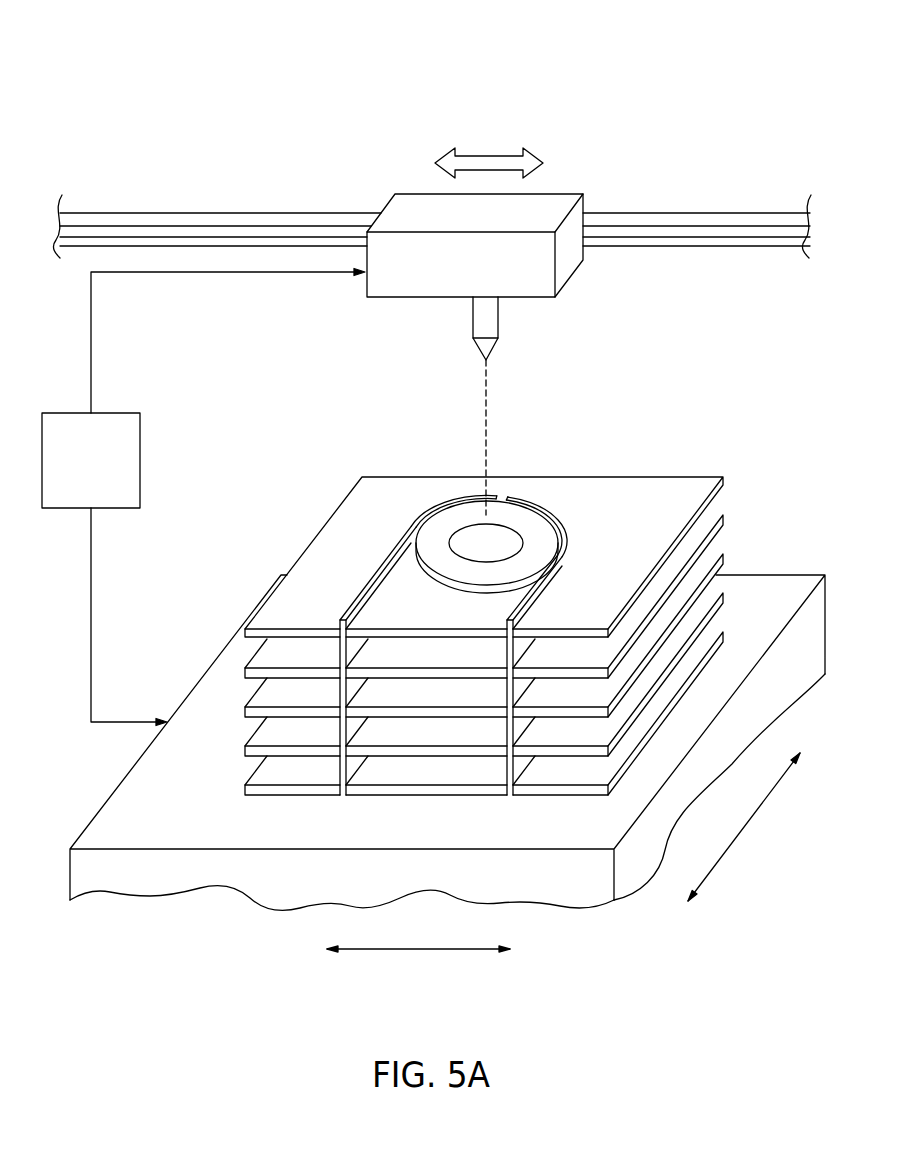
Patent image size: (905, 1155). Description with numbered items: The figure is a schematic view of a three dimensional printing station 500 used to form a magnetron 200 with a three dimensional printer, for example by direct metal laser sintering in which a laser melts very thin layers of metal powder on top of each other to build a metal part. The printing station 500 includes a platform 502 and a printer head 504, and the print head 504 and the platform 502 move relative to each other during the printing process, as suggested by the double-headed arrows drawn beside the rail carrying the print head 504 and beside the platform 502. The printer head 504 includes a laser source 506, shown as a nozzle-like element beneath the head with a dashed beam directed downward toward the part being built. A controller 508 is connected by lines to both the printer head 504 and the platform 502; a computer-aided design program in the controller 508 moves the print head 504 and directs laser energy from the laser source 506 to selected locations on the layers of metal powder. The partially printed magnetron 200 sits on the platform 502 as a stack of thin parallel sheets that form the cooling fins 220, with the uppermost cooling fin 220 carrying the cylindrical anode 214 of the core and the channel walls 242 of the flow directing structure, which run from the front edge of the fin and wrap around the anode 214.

The 3D printing station 500 is at (643, 67).
The printer head 504 is at (407, 207).
The laser source 506 is at (487, 318).
The controller 508 is at (72, 472).
The platform 502 is at (641, 832).
The magnetron 200 is at (622, 452).
The cooling fins 220 is at (677, 487).
The channel walls 242 is at (356, 598).
The anode 214 is at (453, 563).